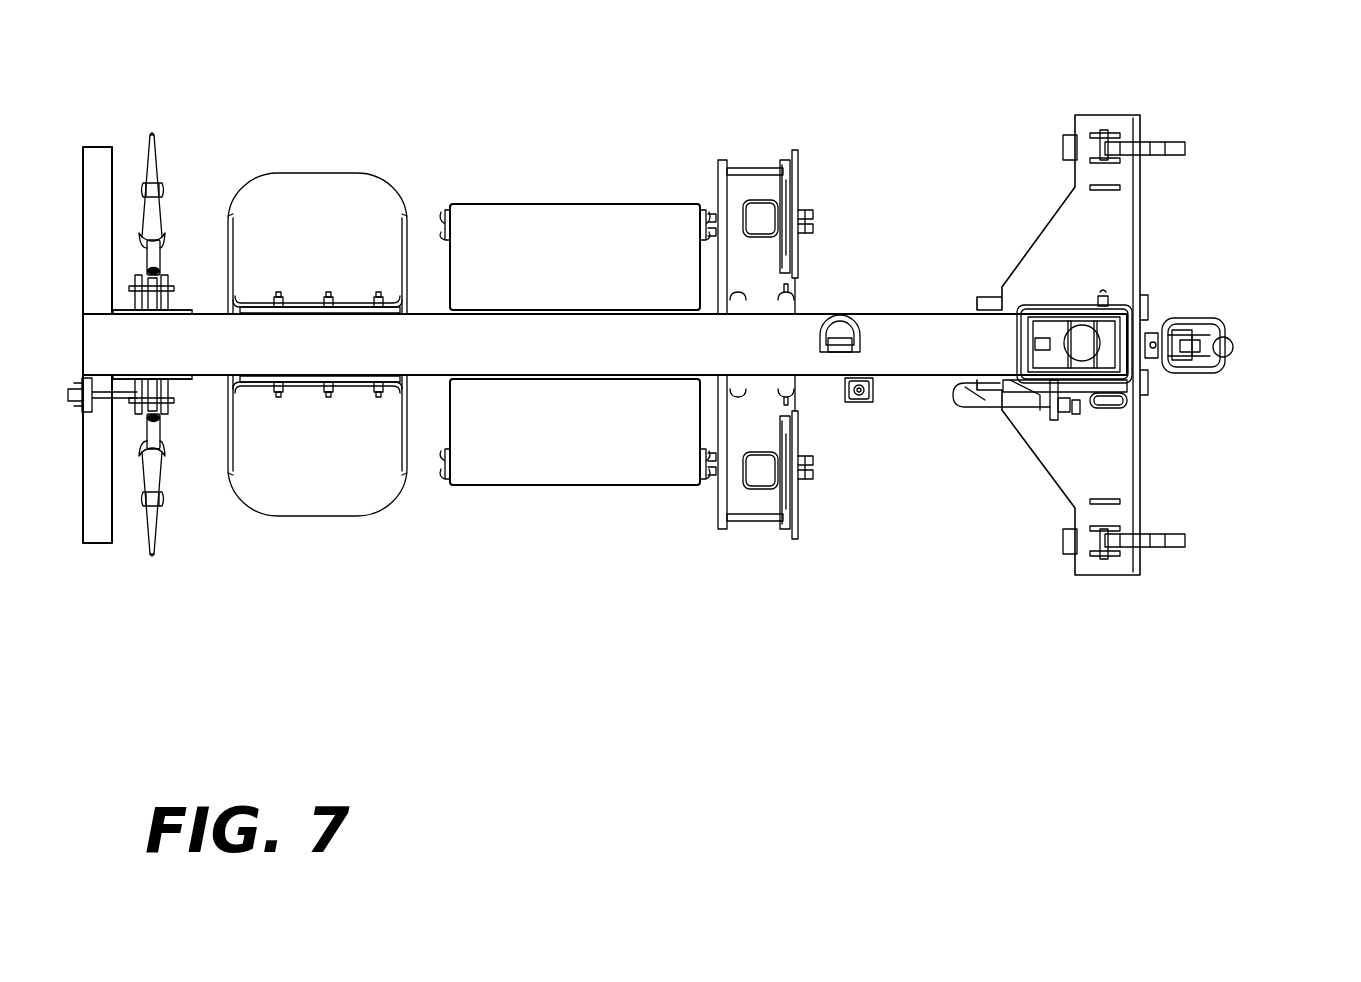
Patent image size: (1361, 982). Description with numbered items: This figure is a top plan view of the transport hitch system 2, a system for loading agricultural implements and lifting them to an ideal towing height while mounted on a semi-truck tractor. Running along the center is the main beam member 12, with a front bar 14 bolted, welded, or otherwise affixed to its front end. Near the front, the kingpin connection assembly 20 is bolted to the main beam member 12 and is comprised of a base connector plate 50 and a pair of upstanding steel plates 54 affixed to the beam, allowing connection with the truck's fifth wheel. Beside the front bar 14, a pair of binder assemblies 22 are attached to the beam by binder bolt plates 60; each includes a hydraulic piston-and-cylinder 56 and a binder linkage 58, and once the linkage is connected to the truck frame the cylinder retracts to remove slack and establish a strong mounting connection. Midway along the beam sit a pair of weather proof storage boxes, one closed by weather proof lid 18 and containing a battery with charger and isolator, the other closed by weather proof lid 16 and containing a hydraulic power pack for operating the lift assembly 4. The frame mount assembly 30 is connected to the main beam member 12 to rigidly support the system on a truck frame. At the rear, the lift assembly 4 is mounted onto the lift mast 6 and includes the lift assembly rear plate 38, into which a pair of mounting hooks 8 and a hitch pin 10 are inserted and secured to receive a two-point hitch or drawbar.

The transport hitch system 2 is at (458, 601).
The lift assembly 4 is at (1227, 468).
The lift mast 6 is at (1100, 317).
The mounting hooks 8 is at (1187, 148).
The hitch pin 10 is at (1243, 342).
The main beam member 12 is at (605, 344).
The front bar 14 is at (98, 147).
The weather proof lid 16 is at (578, 430).
The weather proof lid 18 is at (578, 259).
The kingpin connection assembly 20 is at (282, 540).
The binder assemblies 22 is at (147, 128).
The frame mount assembly 30 is at (800, 380).
The lift assembly rear plate 38 is at (1140, 215).
The base connector plate 50 is at (317, 344).
The upstanding steel plates 54 is at (266, 307).
The hydraulic piston-and-cylinder 56 is at (162, 258).
The binder linkage 58 is at (162, 190).
The binder bolt plate 60 is at (170, 308).